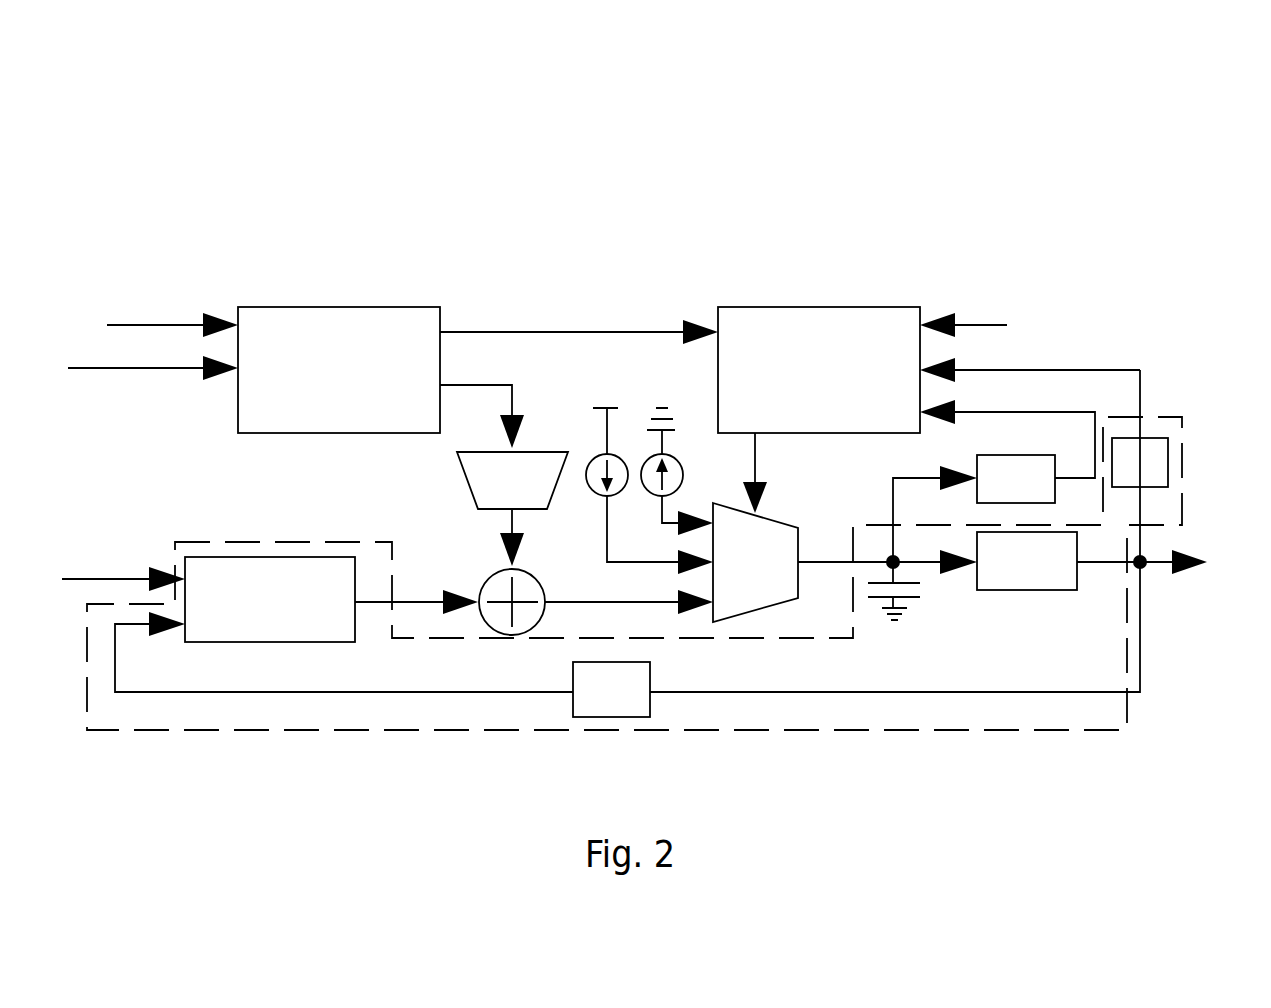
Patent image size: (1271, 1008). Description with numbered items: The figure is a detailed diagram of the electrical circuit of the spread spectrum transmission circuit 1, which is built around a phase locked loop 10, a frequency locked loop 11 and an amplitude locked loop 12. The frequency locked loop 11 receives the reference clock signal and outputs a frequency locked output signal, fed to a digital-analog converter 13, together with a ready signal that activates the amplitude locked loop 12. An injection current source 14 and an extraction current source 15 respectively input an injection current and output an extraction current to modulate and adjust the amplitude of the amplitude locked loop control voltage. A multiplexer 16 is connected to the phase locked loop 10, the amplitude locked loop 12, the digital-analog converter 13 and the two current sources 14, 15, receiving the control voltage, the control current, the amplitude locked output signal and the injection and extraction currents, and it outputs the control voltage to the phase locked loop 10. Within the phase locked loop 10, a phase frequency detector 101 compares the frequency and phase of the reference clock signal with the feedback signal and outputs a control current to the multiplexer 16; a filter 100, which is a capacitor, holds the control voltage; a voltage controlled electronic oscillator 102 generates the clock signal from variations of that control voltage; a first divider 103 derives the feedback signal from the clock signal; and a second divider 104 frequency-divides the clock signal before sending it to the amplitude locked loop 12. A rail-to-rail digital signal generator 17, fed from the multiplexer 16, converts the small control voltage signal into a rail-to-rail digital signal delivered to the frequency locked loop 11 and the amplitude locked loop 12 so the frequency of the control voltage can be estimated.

The spread spectrum transmission circuit 1 is at (1084, 74).
The phase locked loop 10 is at (1128, 722).
The frequency locked loop 11 is at (325, 317).
The amplitude locked loop 12 is at (797, 317).
The digital-analog converter 13 is at (477, 478).
The injection current source 14 is at (597, 457).
The extraction current source 15 is at (650, 457).
The multiplexer 16 is at (772, 532).
The rail-to-rail digital signal generator 17 is at (983, 462).
The filter 100 is at (913, 588).
The phase frequency detector 101 is at (248, 565).
The voltage controlled electronic oscillator 102 is at (1035, 582).
The first divider 103 is at (617, 703).
The second divider 104 is at (1160, 460).